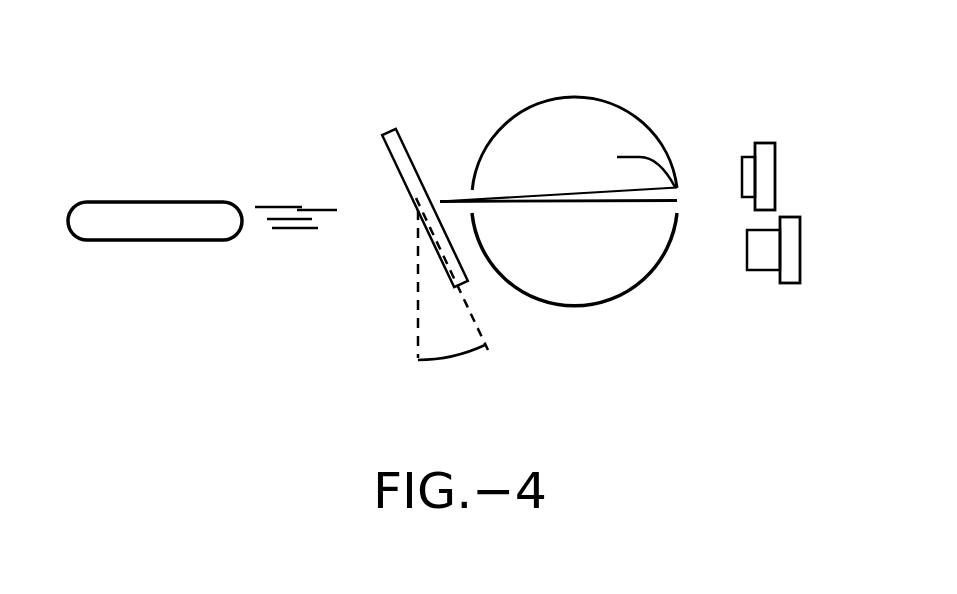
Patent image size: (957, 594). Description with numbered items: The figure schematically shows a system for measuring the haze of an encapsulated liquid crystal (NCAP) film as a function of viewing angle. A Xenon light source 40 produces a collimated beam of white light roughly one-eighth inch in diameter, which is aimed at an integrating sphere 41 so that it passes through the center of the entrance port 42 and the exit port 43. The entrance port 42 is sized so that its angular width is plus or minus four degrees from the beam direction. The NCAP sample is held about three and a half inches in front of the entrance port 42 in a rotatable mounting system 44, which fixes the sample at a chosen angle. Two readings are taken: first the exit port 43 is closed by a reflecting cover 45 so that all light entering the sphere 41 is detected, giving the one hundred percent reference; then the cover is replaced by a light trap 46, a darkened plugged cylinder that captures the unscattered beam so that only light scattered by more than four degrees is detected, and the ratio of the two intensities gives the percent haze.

The Xenon light source 40 is at (142, 202).
The integrating sphere 41 is at (572, 100).
The entrance port 42 is at (443, 198).
The exit port 43 is at (682, 188).
The rotatable mounting system 44 is at (382, 133).
The reflecting cover 45 is at (767, 143).
The light trap 46 is at (745, 263).